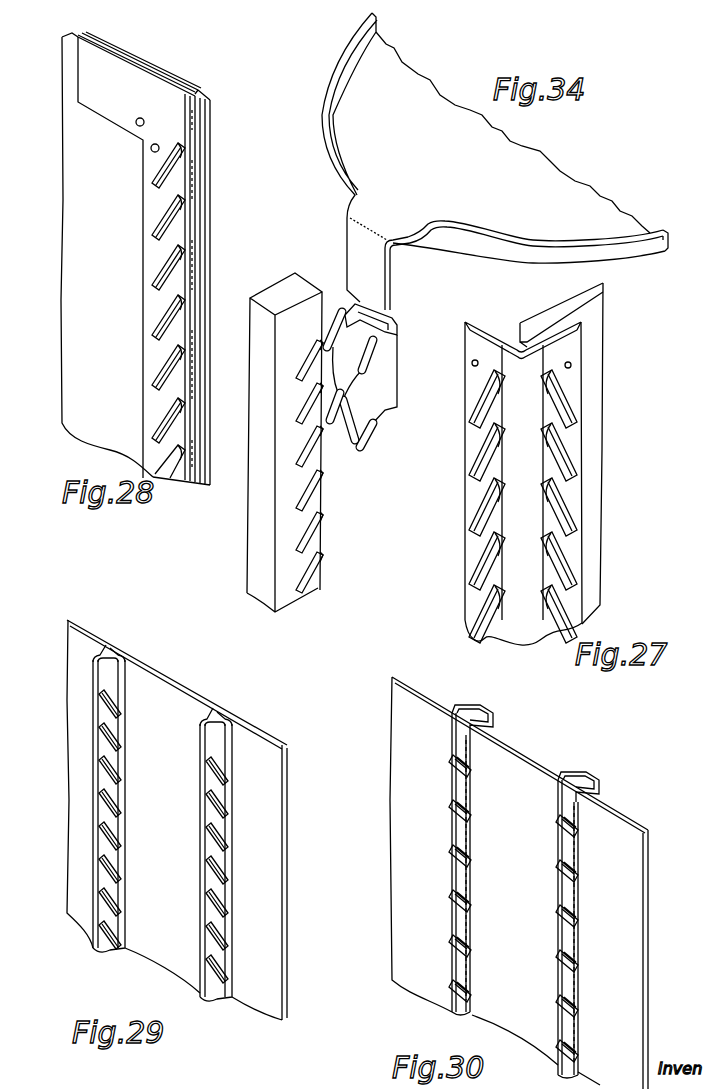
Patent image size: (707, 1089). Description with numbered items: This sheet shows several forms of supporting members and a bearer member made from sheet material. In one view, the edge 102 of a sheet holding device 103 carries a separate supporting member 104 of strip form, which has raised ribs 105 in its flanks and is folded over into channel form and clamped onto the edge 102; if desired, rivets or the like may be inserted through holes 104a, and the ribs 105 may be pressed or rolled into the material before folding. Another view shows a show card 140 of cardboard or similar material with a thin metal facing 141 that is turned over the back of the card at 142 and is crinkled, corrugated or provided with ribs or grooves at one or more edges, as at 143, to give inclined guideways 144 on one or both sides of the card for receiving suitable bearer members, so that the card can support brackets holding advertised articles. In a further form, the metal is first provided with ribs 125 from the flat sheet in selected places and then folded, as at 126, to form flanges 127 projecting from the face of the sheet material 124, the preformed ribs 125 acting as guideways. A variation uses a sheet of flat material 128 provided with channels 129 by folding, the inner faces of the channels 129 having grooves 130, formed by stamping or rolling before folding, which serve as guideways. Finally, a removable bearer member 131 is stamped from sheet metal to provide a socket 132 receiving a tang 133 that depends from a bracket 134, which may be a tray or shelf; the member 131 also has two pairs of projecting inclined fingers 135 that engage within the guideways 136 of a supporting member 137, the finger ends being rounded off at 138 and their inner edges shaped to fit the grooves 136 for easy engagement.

In FIG. 27, the edge 102 is at (518, 343).
In FIG. 27, the sheet holding device 103 is at (538, 321).
In FIG. 27, the supporting member 104 is at (582, 345).
In FIG. 27, the holes 104a is at (574, 371).
In FIG. 27, the raised ribs 105 is at (479, 458).
In FIG. 29, the sheet material 124 is at (192, 699).
In FIG. 29, the ribs 125 is at (122, 828).
In FIG. 29, the fold 126 is at (108, 650).
In FIG. 29, the flanges 127 is at (115, 692).
In FIG. 30, the sheet of flat material 128 is at (614, 822).
In FIG. 30, the channels 129 is at (474, 708).
In FIG. 30, the grooves 130 is at (452, 812).
In FIG. 27, the bearer member 131 is at (371, 392).
In FIG. 27, the socket 132 is at (392, 330).
In FIG. 34, the tang 133 is at (348, 250).
In FIG. 34, the bracket 134 is at (517, 232).
In FIG. 27, the inclined fingers 135 is at (377, 352).
In FIG. 27, the guideways 136 is at (312, 515).
In FIG. 27, the supporting member 137 is at (253, 548).
In FIG. 27, the rounded ends 138 is at (323, 345).
In FIG. 28, the show card 140 is at (68, 262).
In FIG. 28, the metal facing 141 is at (203, 92).
In FIG. 28, the turned-over portion 142 is at (137, 83).
In FIG. 28, the corrugated edge 143 is at (206, 123).
In FIG. 28, the inclined guideways 144 is at (155, 233).